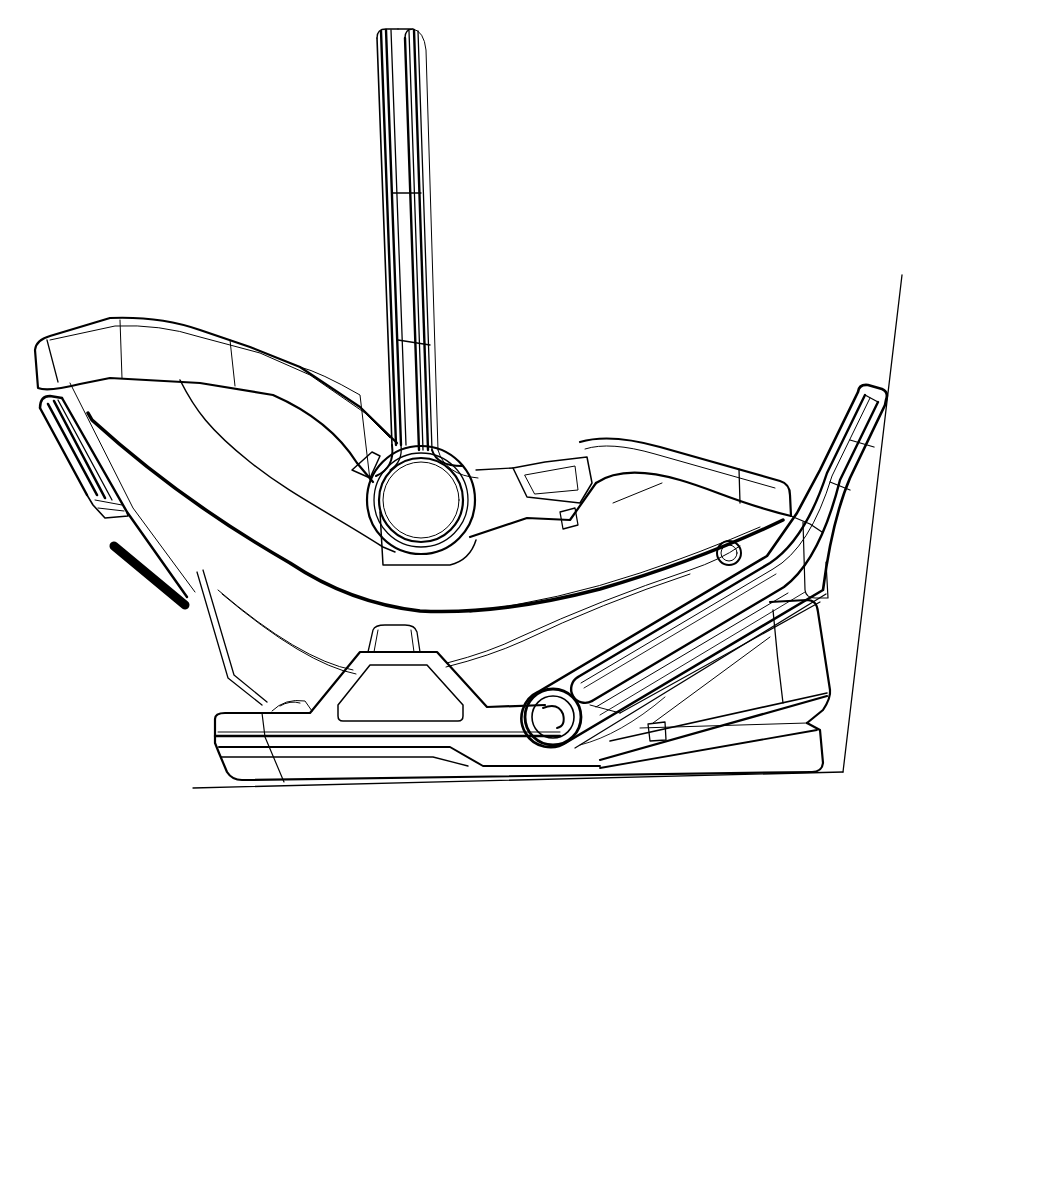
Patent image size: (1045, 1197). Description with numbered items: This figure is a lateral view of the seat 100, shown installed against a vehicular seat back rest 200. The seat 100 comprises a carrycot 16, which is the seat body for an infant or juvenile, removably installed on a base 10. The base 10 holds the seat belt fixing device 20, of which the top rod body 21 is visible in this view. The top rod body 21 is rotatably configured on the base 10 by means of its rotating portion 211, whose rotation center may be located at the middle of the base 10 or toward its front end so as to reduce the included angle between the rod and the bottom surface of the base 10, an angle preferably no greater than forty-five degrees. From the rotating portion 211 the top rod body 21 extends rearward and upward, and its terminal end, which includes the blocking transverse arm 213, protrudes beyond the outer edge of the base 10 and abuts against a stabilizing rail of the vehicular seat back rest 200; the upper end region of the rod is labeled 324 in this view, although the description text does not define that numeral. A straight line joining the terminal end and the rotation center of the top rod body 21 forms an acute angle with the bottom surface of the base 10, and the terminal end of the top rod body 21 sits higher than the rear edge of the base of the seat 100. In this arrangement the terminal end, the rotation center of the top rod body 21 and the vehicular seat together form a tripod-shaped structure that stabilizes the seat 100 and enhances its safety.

The seat 100 is at (197, 140).
The base 10 is at (295, 747).
The carrycot 16 is at (570, 520).
The seat belt fixing device 20 is at (820, 603).
The top rod body 21 is at (717, 607).
The rotating portion 211 is at (550, 722).
The blocking transverse arm 213 is at (669, 643).
The arm top portion 324 is at (840, 458).
The vehicular seat back rest 200 is at (850, 705).